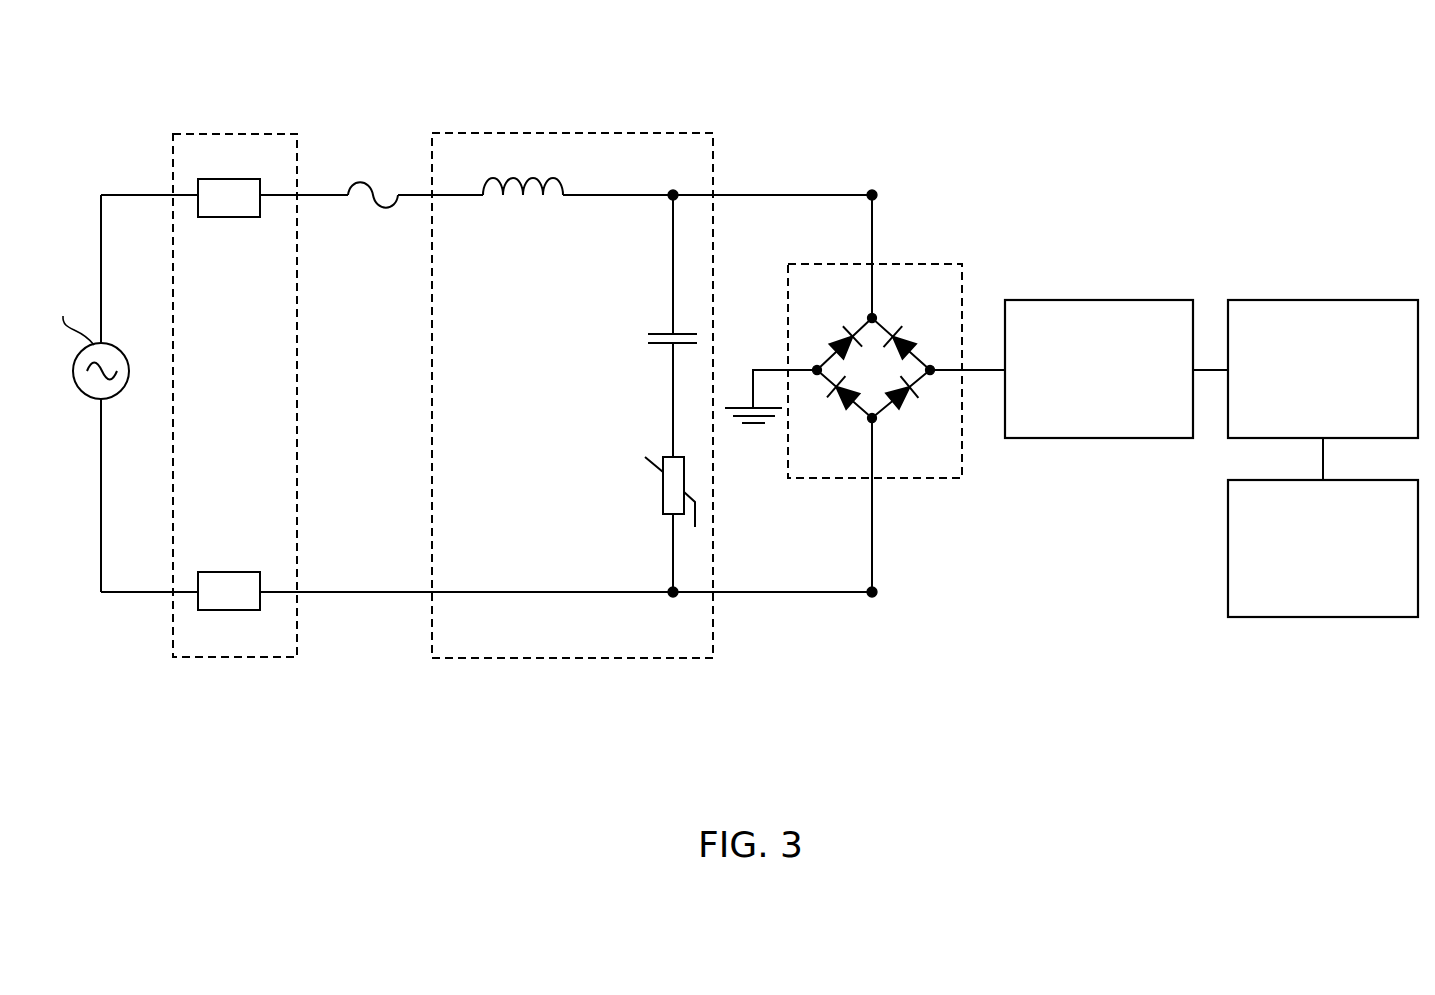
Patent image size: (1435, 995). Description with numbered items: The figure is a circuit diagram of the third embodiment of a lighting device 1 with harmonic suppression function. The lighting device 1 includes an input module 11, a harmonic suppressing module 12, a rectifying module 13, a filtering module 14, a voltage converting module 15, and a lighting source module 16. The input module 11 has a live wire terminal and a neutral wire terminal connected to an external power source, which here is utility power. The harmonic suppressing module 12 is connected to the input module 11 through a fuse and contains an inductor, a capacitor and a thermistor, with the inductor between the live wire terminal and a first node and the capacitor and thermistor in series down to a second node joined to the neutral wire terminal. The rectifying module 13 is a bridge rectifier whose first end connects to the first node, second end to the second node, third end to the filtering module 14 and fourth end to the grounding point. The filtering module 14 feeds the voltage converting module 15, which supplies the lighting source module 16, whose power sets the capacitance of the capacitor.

The lighting device 1 is at (116, 108).
The input module 11 is at (240, 133).
The harmonic suppressing module 12 is at (475, 132).
The rectifying module 13 is at (915, 263).
The filtering module 14 is at (1108, 299).
The voltage converting module 15 is at (1320, 299).
The lighting source module 16 is at (1350, 618).